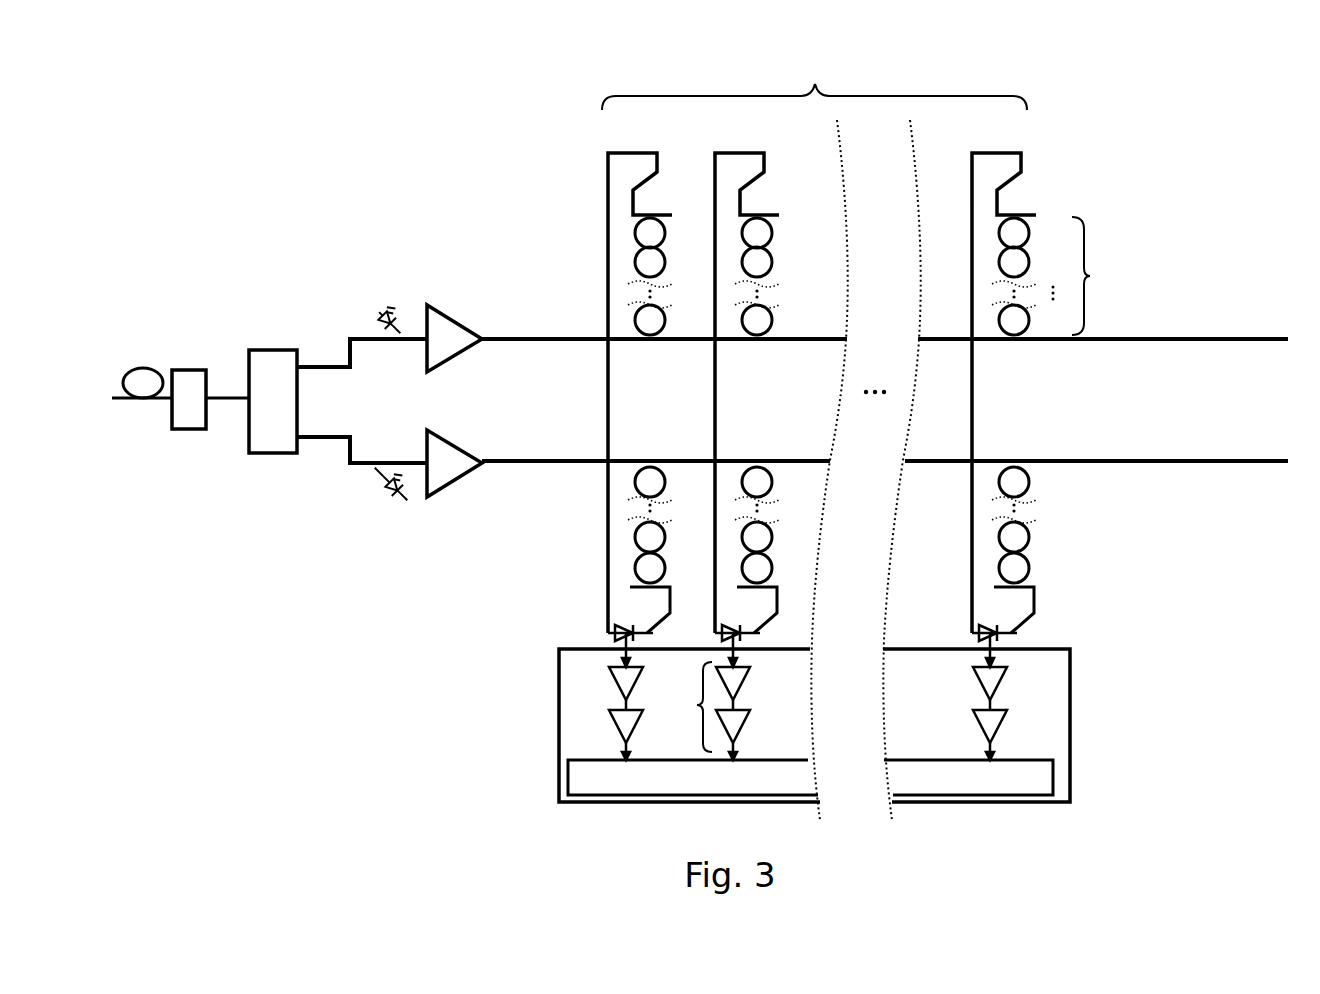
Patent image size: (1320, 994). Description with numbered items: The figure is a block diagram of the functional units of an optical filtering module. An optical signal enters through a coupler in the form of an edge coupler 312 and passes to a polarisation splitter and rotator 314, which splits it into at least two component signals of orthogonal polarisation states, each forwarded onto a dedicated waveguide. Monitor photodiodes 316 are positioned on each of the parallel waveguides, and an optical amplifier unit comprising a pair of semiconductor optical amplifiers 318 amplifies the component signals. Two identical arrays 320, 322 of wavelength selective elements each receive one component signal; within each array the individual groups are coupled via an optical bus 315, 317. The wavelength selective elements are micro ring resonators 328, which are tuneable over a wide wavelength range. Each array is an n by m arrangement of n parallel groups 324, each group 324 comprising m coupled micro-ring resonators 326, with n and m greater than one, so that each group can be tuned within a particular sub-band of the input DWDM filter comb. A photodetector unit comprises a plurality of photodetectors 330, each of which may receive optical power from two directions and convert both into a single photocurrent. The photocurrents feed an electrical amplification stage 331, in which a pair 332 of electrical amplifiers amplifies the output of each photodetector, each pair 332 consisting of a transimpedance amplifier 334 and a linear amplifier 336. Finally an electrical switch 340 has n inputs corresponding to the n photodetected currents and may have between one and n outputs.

The edge coupler 312 is at (168, 443).
The polarisation splitter and rotator 314 is at (248, 462).
The optical bus 315 is at (535, 337).
The monitor photodiode 316 is at (383, 303).
The optical bus 317 is at (541, 464).
The semiconductor optical amplifier 318 is at (467, 315).
The array of micro ring resonators 320 is at (814, 339).
The array of micro ring resonators 322 is at (1110, 524).
The group of coupled micro-ring resonators 324 is at (1030, 180).
The coupled micro-ring resonators 326 is at (1093, 276).
The micro ring resonator 328 is at (1050, 220).
The photodetector 330 is at (605, 633).
The electrical amplification stage 331 is at (618, 698).
The pair of electrical amplifiers 332 is at (702, 696).
The transimpedance amplifier 334 is at (1012, 688).
The linear amplifier 336 is at (1007, 726).
The electrical switch 340 is at (977, 777).